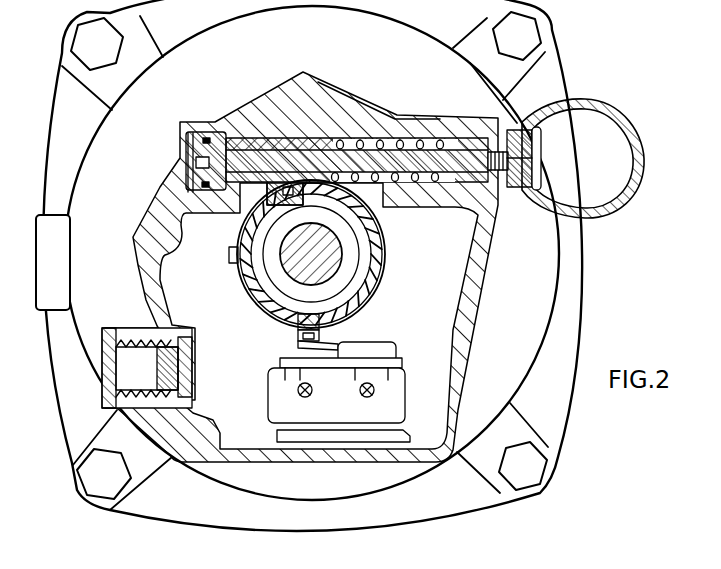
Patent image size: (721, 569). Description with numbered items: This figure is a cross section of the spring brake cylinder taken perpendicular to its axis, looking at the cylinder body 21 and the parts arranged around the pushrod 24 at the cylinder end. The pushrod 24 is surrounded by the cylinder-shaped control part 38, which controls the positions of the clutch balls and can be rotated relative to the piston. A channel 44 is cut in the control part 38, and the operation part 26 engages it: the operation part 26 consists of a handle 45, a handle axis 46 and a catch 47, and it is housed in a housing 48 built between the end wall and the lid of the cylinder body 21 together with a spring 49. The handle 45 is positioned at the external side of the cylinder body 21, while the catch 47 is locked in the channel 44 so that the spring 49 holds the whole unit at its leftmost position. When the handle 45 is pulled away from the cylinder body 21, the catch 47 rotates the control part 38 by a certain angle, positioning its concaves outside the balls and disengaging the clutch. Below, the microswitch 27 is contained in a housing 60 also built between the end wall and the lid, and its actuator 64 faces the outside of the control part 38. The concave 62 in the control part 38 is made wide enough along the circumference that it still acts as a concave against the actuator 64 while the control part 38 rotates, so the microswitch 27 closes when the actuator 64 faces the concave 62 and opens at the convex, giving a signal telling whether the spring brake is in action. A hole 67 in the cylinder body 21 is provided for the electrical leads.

The cylinder body 21 is at (486, 280).
The pushrod 24 is at (287, 279).
The operation part 26 is at (587, 136).
The microswitch 27 is at (400, 359).
The control part 38 is at (374, 273).
The channel 44 is at (282, 208).
The handle 45 is at (624, 116).
The handle axis 46 is at (422, 168).
The catch 47 is at (293, 196).
The housing 48 is at (410, 141).
The spring 49 is at (417, 186).
The housing 60 is at (249, 425).
The concave 62 is at (358, 300).
The actuator 64 is at (298, 335).
The hole for electrical leads 67 is at (174, 361).